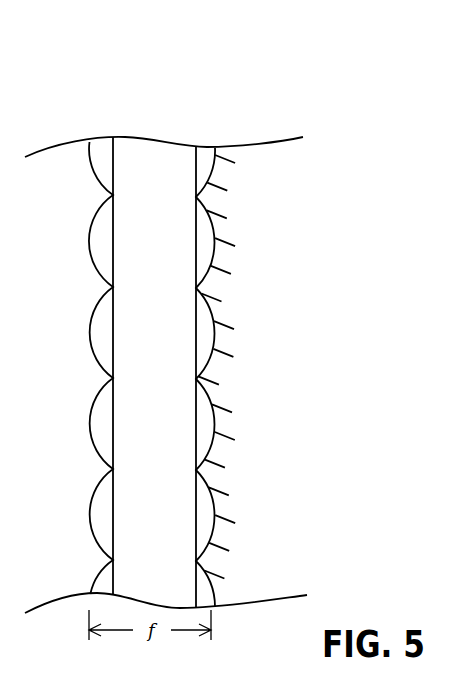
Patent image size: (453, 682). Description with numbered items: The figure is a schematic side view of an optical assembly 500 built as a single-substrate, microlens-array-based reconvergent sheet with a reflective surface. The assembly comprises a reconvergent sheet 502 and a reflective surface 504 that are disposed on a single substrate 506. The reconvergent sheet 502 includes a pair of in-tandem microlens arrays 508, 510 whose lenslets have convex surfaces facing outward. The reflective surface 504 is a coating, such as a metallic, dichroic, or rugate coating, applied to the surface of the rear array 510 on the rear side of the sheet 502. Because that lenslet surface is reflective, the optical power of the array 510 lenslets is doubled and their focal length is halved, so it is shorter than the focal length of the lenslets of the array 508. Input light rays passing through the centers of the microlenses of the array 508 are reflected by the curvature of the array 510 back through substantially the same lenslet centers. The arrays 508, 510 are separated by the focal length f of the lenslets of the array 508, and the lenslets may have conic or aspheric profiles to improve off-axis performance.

The optical assembly 500 is at (270, 90).
The reconvergent sheet 502 is at (210, 102).
The reflective surface 504 is at (216, 254).
The single substrate 506 is at (175, 375).
The microlens array 508 is at (102, 114).
The microlens array 510 is at (204, 128).